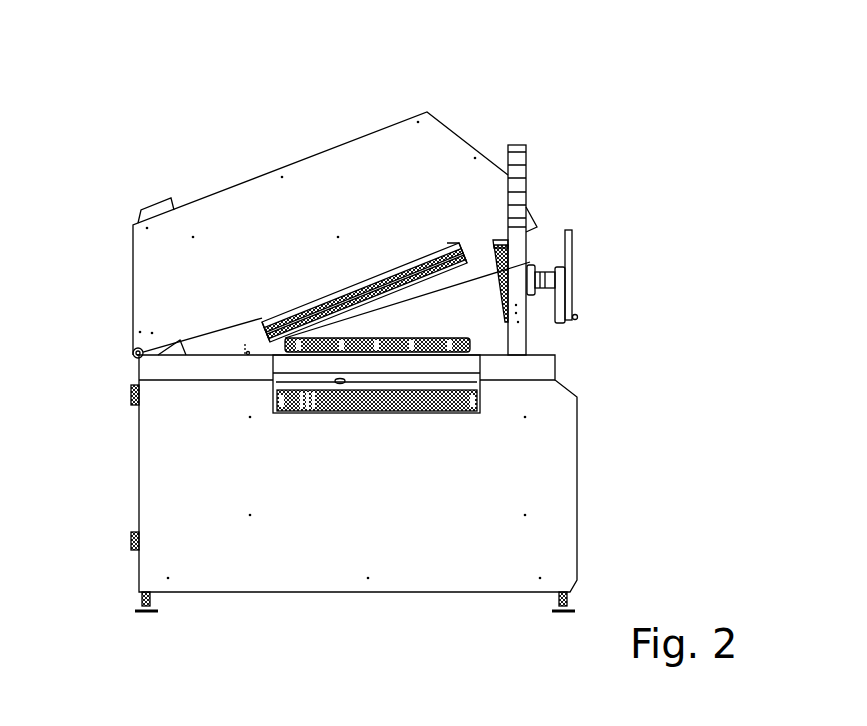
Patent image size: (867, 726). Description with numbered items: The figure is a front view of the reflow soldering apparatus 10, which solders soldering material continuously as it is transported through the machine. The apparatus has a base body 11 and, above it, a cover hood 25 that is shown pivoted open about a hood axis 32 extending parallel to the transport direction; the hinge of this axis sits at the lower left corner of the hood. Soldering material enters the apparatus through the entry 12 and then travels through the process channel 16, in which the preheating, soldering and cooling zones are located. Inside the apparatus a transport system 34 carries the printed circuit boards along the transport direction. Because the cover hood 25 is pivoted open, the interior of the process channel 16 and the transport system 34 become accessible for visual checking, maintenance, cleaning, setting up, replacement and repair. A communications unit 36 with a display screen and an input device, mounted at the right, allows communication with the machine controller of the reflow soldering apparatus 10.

The reflow soldering apparatus 10 is at (600, 178).
The base body 11 is at (472, 445).
The entry 12 is at (428, 413).
The process channel 16 is at (452, 292).
The cover hood 25 is at (446, 147).
The hood axis 32 is at (132, 353).
The transport system 34 is at (320, 413).
The communications unit 36 is at (578, 290).